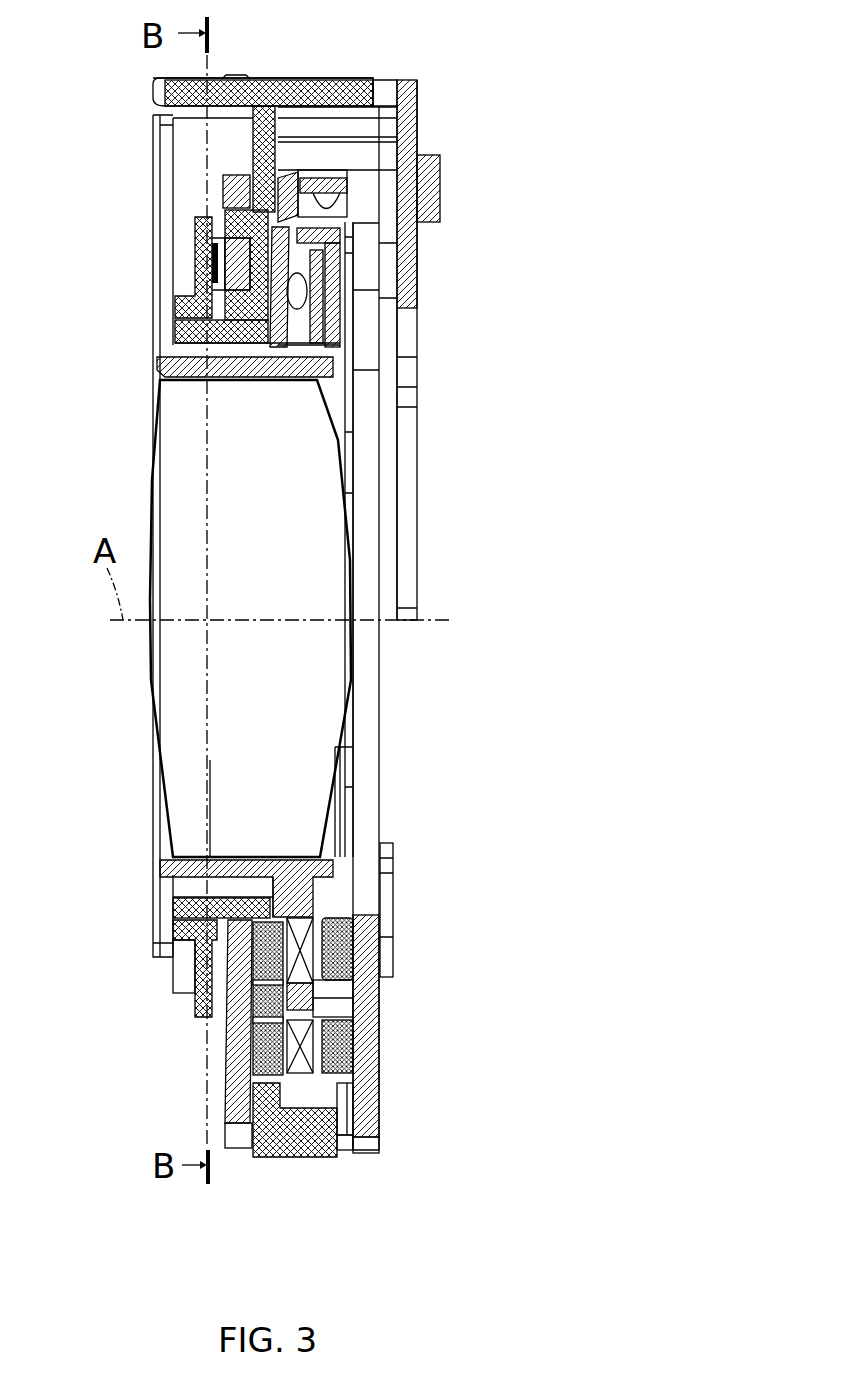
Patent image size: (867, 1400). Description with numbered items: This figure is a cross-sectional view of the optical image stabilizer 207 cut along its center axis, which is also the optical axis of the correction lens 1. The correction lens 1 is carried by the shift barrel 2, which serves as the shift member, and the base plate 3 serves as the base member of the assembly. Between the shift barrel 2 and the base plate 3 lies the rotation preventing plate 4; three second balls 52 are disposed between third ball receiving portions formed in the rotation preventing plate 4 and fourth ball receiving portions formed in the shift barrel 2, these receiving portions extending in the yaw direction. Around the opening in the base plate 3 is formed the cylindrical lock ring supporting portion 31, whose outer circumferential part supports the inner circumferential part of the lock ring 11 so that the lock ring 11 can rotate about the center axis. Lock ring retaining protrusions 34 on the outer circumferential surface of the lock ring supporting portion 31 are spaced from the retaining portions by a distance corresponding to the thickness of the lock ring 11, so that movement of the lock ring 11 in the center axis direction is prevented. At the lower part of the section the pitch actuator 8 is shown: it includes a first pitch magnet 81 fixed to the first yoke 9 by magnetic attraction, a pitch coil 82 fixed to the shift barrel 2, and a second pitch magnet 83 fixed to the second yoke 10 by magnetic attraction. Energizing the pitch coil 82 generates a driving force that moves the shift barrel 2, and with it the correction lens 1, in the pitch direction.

The optical image stabilizer 207 is at (332, 47).
The base plate 3 is at (163, 103).
The lock ring retaining protrusions 34 is at (200, 290).
The lock ring supporting portion 31 is at (178, 325).
The rotation preventing plate 4 is at (297, 255).
The second balls 52 is at (350, 268).
The correction lens 1 is at (230, 632).
The shift barrel 2 is at (158, 848).
The lock ring 11 is at (177, 938).
The first yoke 9 is at (240, 1037).
The second yoke 10 is at (378, 1015).
The first pitch magnet 81 is at (237, 1128).
The pitch coil 82 is at (303, 1040).
The second pitch magnet 83 is at (352, 1085).
The pitch actuator 8 is at (370, 1220).